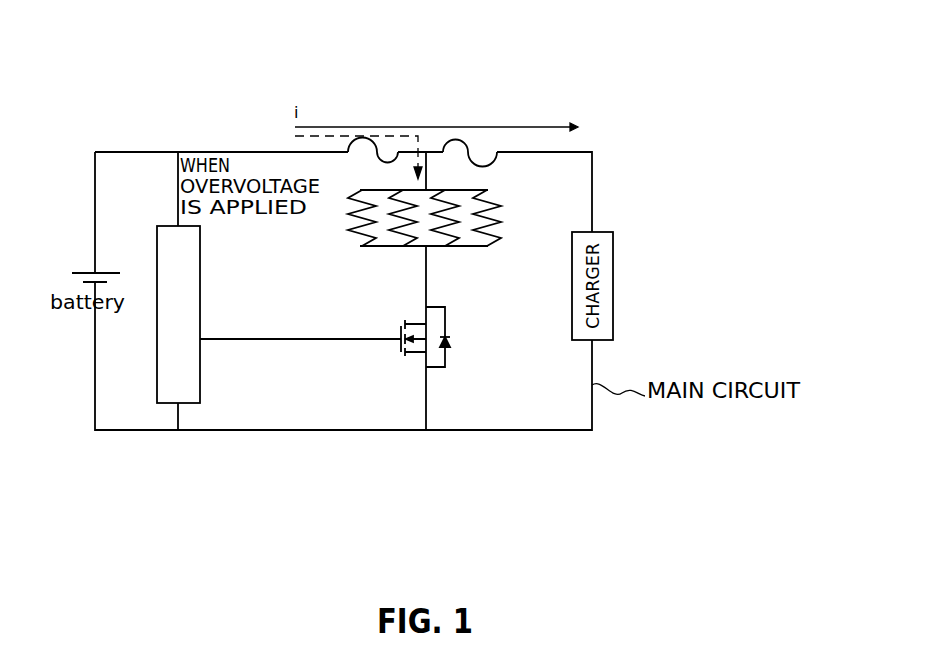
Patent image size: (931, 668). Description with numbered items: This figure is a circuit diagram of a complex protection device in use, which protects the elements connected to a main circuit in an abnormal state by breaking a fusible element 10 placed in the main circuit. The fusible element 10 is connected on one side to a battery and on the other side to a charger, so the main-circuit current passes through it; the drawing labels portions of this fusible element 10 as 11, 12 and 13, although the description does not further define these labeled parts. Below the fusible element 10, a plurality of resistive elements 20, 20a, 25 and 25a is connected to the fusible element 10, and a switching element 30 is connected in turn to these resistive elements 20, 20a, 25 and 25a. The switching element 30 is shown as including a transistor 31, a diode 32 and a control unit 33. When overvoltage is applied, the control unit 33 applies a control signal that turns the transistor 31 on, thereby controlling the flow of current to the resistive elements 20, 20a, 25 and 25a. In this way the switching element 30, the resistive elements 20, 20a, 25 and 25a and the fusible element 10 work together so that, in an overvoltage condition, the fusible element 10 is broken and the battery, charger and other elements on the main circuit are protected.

The fusible element 10 is at (350, 33).
The first fuse element 11 is at (366, 140).
The connection node 12 is at (428, 152).
The second fuse element 13 is at (465, 140).
The resistive element 20 is at (350, 233).
The resistive element 25 is at (397, 233).
The resistive element 20a is at (447, 237).
The resistive element 25a is at (490, 238).
The switching element 30 is at (190, 540).
The transistor 31 is at (418, 356).
The diode 32 is at (447, 370).
The control unit 33 is at (201, 404).